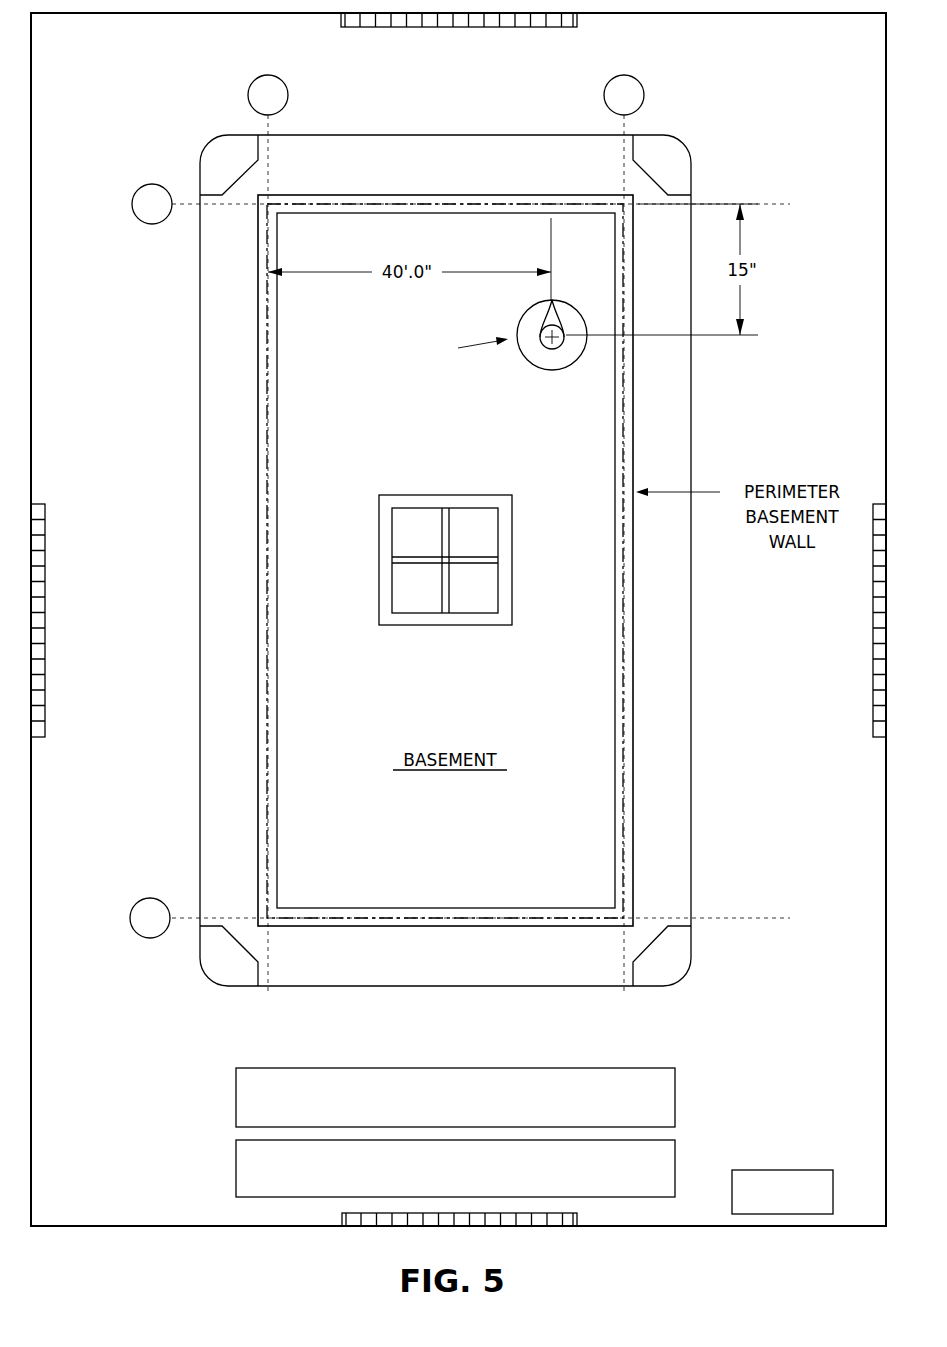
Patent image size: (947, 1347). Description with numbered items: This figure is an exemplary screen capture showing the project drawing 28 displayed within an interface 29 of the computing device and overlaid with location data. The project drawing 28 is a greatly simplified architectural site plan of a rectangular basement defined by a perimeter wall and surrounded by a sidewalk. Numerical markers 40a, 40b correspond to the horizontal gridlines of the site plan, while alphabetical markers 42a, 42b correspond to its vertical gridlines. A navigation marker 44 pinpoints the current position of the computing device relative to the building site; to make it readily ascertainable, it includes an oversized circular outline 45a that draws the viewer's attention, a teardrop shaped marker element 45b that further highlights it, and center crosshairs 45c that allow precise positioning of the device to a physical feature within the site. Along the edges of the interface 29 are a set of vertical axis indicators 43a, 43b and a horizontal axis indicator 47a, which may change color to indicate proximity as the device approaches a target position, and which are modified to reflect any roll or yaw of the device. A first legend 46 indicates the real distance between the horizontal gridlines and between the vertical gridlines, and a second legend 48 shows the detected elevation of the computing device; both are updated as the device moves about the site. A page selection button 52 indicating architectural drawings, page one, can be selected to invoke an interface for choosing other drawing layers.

The project drawing 28 is at (485, 560).
The interface 29 is at (118, 1227).
The numerical marker 40a is at (152, 226).
The numerical marker 40b is at (150, 897).
The alphabetical marker 42a is at (288, 95).
The alphabetical marker 42b is at (644, 95).
The vertical axis indicator 43a is at (466, 28).
The vertical axis indicator 43b is at (342, 1220).
The navigation marker 44 is at (476, 351).
The oversized circular outline 45a is at (553, 370).
The teardrop shaped marker element 45b is at (560, 346).
The center crosshairs 45c is at (554, 333).
The first legend 46 is at (236, 1090).
The horizontal axis indicator 47a is at (46, 655).
The second legend 48 is at (236, 1162).
The page selection button 52 is at (783, 1170).